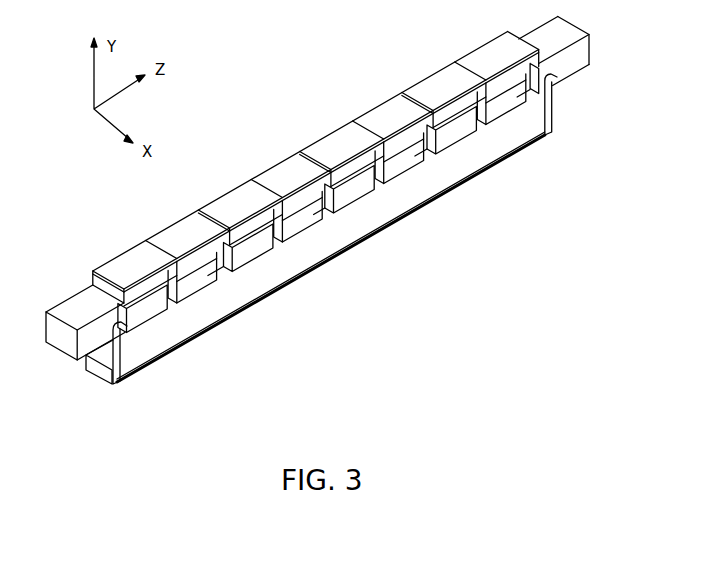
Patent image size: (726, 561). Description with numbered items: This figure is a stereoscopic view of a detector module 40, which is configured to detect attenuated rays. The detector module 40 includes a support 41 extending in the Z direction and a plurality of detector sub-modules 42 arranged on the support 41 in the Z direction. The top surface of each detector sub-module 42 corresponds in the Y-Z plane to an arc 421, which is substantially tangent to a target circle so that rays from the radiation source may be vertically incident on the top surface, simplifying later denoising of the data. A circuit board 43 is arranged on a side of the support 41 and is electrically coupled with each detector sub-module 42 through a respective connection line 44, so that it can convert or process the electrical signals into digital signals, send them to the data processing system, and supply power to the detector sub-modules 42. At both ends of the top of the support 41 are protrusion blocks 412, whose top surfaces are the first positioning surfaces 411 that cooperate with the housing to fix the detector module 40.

The detector module 40 is at (318, 130).
The support 41 is at (102, 363).
The first positioning surface 411 is at (88, 310).
The protrusion block 412 is at (95, 335).
The detector sub-module 42 is at (400, 87).
The arc 421 is at (385, 118).
The circuit board 43 is at (377, 204).
The connection line 44 is at (462, 136).